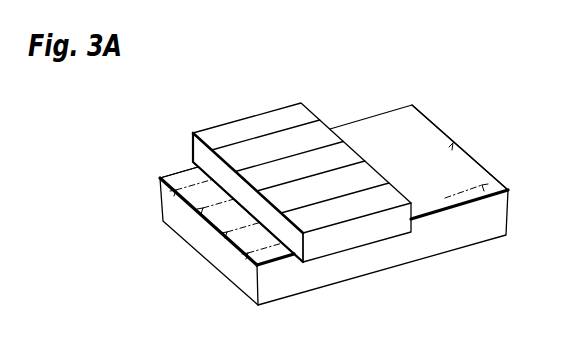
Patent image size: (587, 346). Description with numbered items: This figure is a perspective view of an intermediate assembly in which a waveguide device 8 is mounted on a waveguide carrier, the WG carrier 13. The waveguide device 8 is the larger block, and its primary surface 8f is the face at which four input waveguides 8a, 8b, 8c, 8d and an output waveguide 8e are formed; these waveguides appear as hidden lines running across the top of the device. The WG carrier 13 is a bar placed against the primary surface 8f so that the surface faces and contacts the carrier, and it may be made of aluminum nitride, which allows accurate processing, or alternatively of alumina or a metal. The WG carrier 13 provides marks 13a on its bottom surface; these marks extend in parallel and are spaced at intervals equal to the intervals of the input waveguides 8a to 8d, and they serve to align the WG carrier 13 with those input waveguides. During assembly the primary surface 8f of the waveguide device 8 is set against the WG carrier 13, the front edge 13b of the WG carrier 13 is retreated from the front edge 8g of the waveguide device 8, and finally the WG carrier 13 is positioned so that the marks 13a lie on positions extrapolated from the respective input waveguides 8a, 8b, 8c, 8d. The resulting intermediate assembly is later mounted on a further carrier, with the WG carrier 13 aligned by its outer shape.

The waveguide device 8 is at (382, 273).
The input waveguide 8a is at (248, 253).
The input waveguide 8b is at (227, 232).
The input waveguide 8c is at (203, 208).
The input waveguide 8d is at (176, 190).
The output waveguide 8e is at (482, 185).
The primary surface 8f is at (453, 143).
The front edge 8g is at (157, 181).
The WG carrier 13 is at (261, 120).
The marks 13a is at (363, 192).
The front edge 13b is at (197, 148).